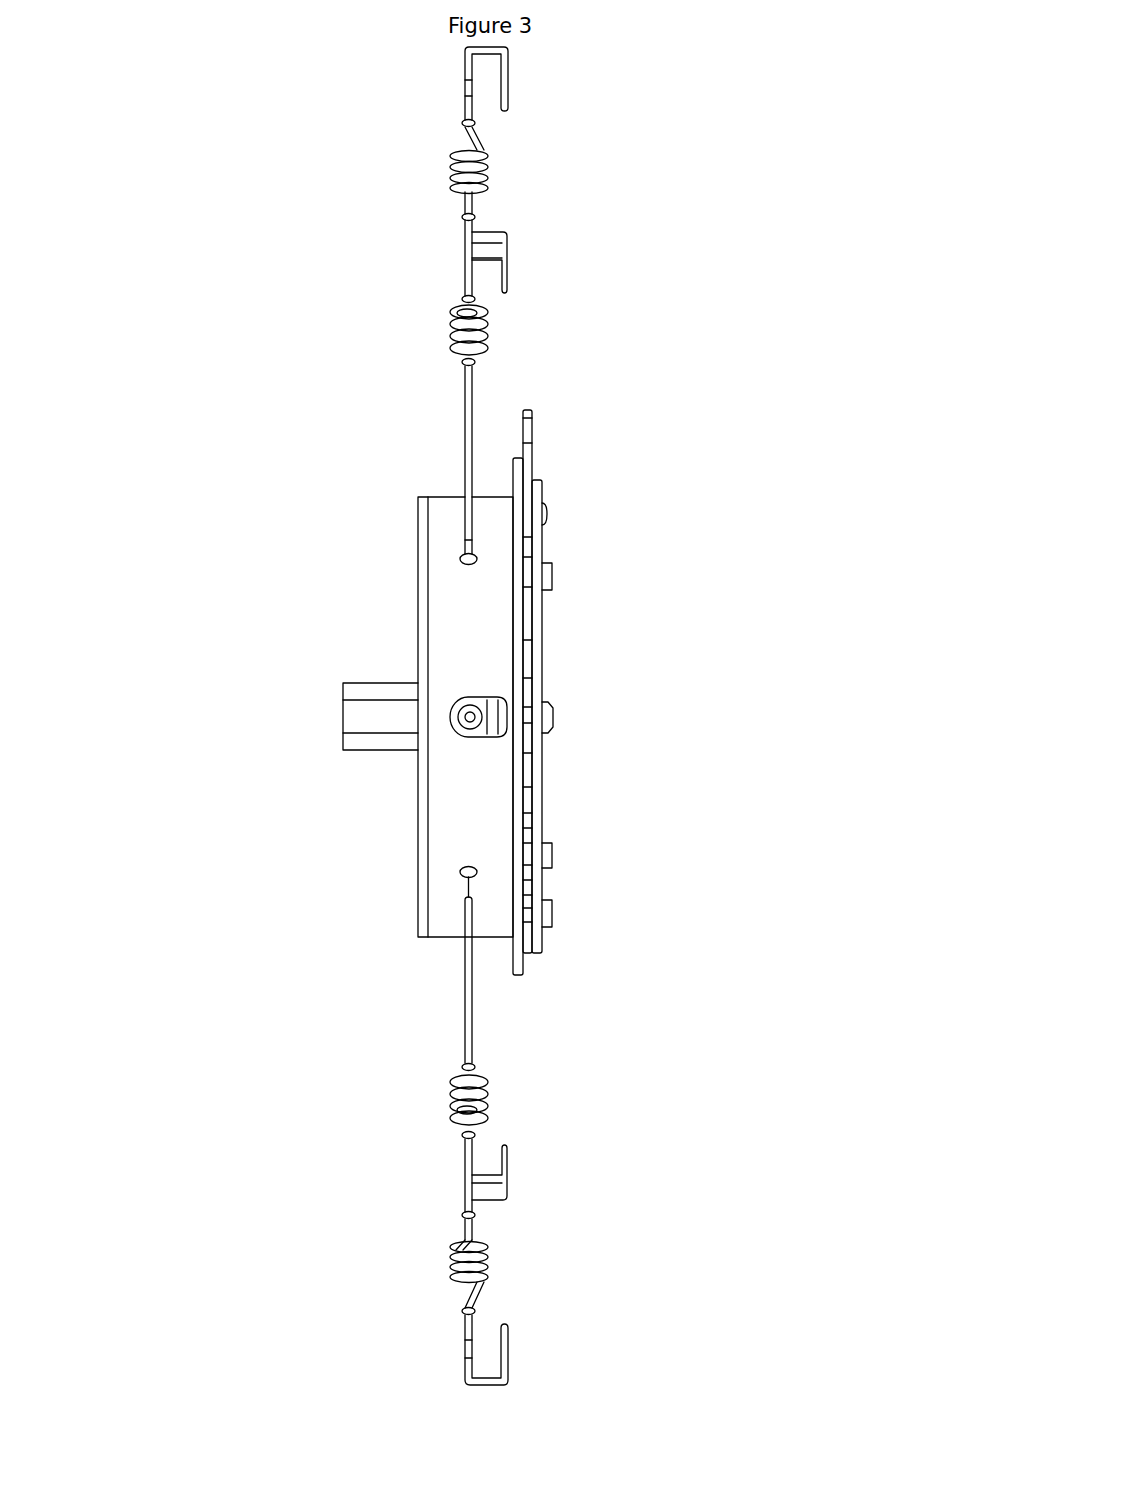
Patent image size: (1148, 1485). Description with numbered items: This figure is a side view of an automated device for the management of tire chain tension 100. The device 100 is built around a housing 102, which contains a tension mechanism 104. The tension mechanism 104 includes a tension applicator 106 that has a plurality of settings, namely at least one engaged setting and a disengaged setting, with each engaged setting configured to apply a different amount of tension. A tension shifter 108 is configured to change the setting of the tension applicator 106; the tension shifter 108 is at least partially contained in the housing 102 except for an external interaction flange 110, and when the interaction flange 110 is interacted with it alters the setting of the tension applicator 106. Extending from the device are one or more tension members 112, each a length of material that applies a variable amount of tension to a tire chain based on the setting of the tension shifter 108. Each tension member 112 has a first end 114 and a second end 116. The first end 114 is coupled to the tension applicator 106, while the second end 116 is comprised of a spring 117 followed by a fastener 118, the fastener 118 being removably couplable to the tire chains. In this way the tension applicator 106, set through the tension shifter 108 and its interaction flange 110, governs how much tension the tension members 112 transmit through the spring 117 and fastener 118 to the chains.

The device for the management of tire chain tension 100 is at (592, 597).
The housing 102 is at (465, 807).
The tension mechanism 104 is at (574, 737).
The tension applicator 106 is at (588, 662).
The tension shifter 108 is at (365, 741).
The interaction flange 110 is at (380, 720).
The tension member 112 is at (468, 407).
The first end 114 is at (467, 551).
The second end 116 is at (473, 217).
The spring 117 is at (482, 175).
The fastener 118 is at (467, 67).